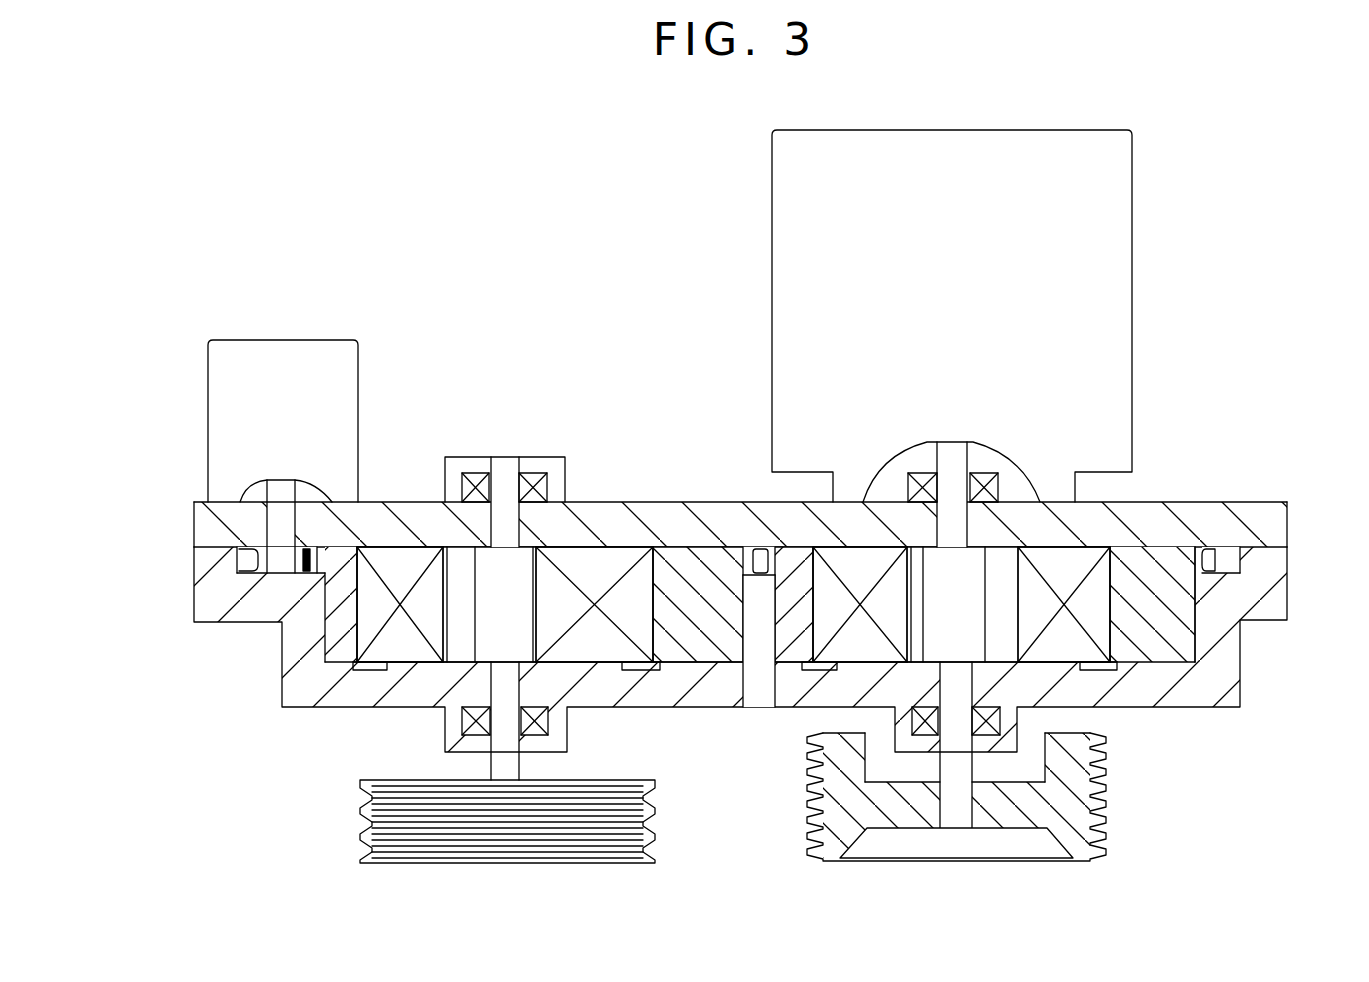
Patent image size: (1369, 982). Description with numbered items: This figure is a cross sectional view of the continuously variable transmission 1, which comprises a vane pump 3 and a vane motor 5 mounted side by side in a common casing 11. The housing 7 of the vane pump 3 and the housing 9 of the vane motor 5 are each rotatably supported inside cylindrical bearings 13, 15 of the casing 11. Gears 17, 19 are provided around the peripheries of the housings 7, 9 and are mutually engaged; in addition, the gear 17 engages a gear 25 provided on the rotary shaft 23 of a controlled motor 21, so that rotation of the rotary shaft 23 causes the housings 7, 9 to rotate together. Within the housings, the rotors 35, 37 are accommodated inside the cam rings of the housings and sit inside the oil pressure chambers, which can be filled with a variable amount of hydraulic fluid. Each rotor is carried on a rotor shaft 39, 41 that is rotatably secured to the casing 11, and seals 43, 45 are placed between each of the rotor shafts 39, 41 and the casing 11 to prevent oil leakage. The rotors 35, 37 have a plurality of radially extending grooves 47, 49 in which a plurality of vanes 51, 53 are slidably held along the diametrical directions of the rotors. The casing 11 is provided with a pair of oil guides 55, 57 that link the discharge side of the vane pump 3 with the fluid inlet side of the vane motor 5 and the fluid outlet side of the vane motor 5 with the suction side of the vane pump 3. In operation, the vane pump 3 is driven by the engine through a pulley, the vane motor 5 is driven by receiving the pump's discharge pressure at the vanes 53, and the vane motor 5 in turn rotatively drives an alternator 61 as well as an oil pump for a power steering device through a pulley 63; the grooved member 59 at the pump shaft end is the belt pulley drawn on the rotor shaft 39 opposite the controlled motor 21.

The continuously variable transmission 1 is at (388, 307).
The vane pump 3 is at (265, 745).
The vane motor 5 is at (782, 748).
The housing 7 is at (345, 556).
The housing 9 is at (1168, 556).
The casing 11 is at (197, 532).
The cylindrical bearing 13 is at (340, 650).
The cylindrical bearing 15 is at (1187, 632).
The gear 17 is at (300, 580).
The gear 19 is at (1245, 563).
The controlled motor 21 is at (254, 396).
The rotary shaft 23 is at (275, 497).
The gear 25 is at (237, 560).
The rotor 35 is at (487, 650).
The rotor 37 is at (937, 650).
The rotor shaft 39 is at (505, 465).
The rotor shaft 41 is at (953, 456).
The seal 43 is at (477, 478).
The seal 45 is at (921, 478).
The radially extending grooves 47 is at (547, 567).
The radially extending grooves 49 is at (1002, 567).
The vanes 51 is at (577, 600).
The vanes 53 is at (1032, 597).
The oil guide 55 is at (640, 668).
The oil guide 57 is at (378, 665).
The pulley 59 is at (360, 808).
The alternator 61 is at (930, 230).
The pulley 63 is at (1105, 808).